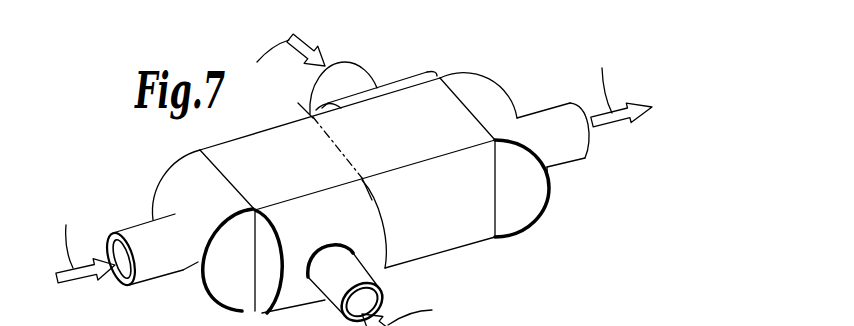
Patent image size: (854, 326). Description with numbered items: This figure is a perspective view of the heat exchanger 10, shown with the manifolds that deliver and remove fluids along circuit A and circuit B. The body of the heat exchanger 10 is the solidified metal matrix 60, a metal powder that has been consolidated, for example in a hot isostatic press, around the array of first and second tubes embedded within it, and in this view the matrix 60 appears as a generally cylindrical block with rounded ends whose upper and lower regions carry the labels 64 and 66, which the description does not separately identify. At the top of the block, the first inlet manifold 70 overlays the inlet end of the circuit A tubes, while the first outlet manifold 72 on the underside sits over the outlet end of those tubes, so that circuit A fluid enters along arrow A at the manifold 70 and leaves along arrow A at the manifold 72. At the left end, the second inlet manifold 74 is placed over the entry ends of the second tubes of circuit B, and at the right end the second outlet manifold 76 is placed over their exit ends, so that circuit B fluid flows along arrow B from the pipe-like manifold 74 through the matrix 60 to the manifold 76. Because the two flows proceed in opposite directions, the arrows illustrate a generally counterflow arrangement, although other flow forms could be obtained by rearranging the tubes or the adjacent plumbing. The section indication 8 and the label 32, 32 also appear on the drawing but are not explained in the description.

The section line 8- 8 is at (298, 103).
The heat exchanger 10 is at (148, 163).
The elements 32 is at (106, 320).
The matrix 60 is at (449, 224).
The upper housing portion 64 is at (413, 135).
The lower housing portion 66 is at (470, 199).
The first inlet manifold 70 is at (423, 70).
The first outlet manifold 72 is at (386, 268).
The second inlet manifold 74 is at (165, 197).
The second outlet manifold 76 is at (546, 116).